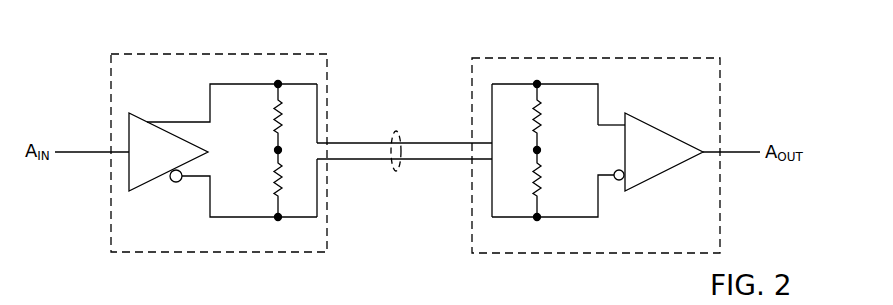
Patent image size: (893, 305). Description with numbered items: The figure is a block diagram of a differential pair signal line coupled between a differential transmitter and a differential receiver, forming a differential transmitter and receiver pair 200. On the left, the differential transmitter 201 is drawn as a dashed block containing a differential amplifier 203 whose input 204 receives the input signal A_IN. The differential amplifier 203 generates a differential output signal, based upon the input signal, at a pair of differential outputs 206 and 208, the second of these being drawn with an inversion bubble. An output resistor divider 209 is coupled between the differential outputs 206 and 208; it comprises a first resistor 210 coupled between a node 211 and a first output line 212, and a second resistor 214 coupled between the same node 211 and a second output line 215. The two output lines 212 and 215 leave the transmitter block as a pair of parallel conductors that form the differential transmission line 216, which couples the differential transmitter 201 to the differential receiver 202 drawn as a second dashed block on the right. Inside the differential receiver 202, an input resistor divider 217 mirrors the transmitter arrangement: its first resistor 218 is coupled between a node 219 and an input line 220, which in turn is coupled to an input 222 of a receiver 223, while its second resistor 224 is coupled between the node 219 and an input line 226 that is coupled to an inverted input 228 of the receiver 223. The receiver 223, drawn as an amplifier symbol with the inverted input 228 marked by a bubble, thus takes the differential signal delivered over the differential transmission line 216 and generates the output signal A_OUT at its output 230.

The differential transmitter and receiver pair 200 is at (108, 263).
The differential transmitter 201 is at (298, 56).
The differential receiver 202 is at (680, 59).
The differential amplifier 203 is at (127, 117).
The input 204 is at (118, 156).
The differential output 206 is at (152, 121).
The differential output 208 is at (173, 183).
The output resistor divider 209 is at (262, 158).
The first resistor 210 is at (320, 97).
The node 211 is at (274, 148).
The first output line 212 is at (323, 120).
The second resistor 214 is at (318, 192).
The second output line 215 is at (319, 170).
The differential transmission line 216 is at (401, 135).
The input resistor divider 217 is at (547, 128).
The first resistor 218 is at (533, 101).
The node 219 is at (534, 148).
The input line 220 is at (601, 106).
The input 222 is at (616, 127).
The receiver 223 is at (662, 129).
The second resistor 224 is at (533, 186).
The input line 226 is at (597, 186).
The inverted input 228 is at (621, 182).
The output 230 is at (710, 152).